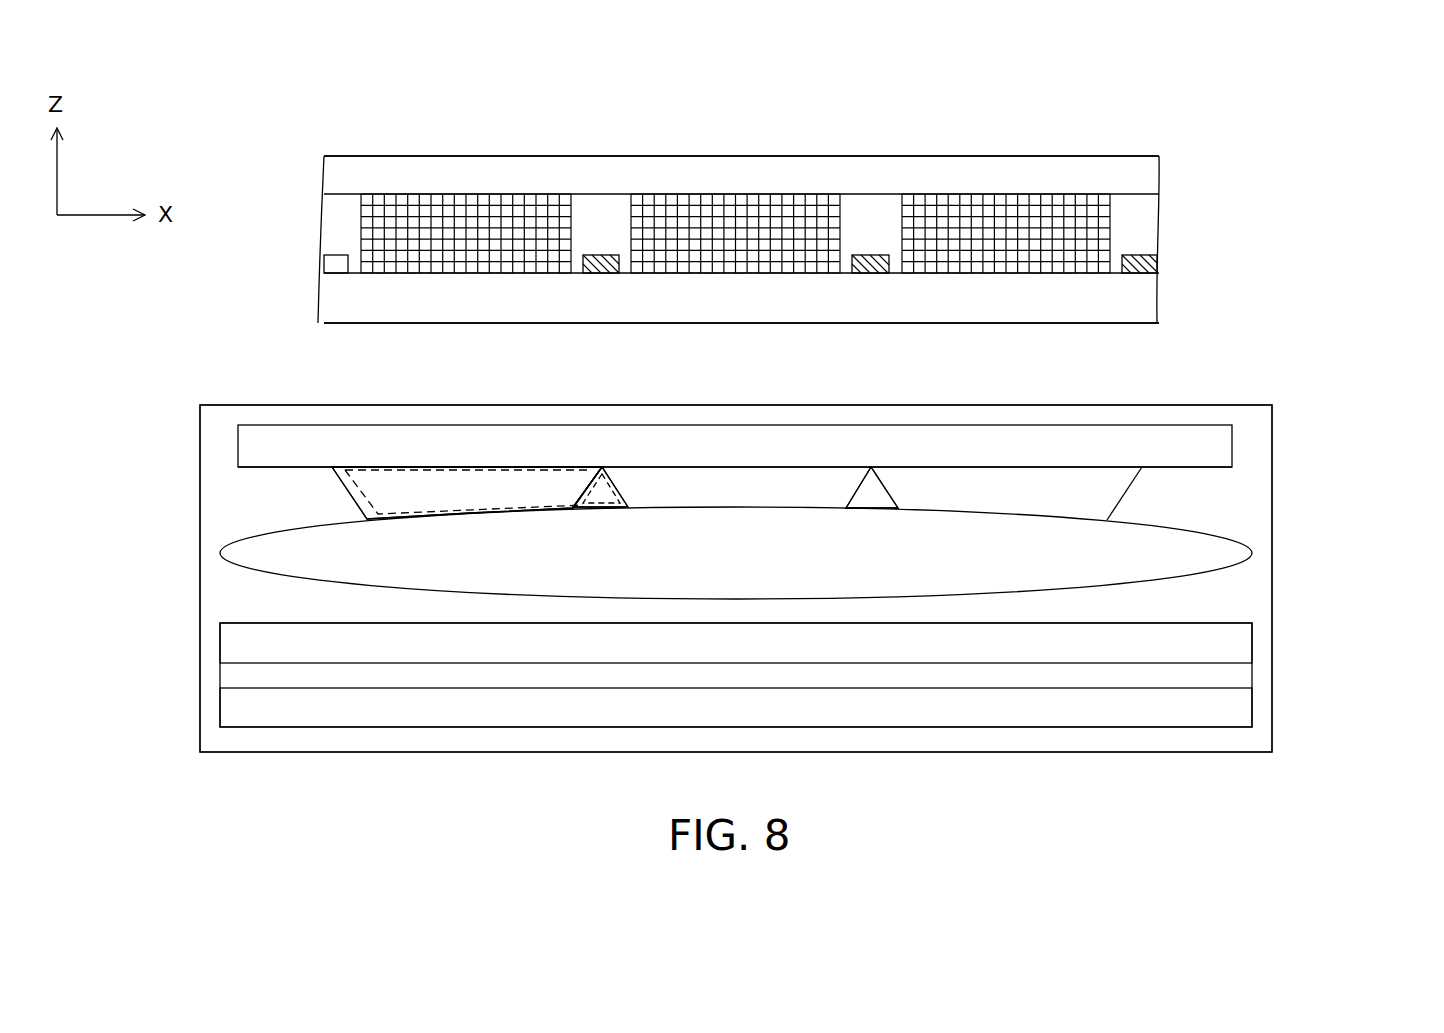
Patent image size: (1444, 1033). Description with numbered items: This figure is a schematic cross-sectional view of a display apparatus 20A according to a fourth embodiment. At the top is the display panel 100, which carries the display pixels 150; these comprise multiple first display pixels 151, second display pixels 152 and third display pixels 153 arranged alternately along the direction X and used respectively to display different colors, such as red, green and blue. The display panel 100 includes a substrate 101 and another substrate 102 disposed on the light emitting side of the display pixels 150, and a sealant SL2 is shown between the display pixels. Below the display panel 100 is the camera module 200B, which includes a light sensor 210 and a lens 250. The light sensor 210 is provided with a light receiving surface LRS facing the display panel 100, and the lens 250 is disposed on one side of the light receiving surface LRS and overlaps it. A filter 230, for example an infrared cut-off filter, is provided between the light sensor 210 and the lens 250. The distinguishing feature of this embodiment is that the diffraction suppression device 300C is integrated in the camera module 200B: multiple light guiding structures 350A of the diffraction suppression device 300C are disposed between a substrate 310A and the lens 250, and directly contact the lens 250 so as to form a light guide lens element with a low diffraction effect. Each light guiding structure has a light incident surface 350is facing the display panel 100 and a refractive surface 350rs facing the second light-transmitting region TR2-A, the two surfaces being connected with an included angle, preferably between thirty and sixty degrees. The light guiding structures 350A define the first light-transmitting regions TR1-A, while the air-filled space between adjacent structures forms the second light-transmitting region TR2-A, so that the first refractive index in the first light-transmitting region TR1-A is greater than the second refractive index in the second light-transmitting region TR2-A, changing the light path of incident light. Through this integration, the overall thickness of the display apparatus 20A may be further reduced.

The display panel 100 is at (300, 157).
The first substrate 101 is at (1145, 290).
The substrate 102 is at (1148, 173).
The second sealant SL2 is at (1148, 265).
The display pixels 150 is at (735, 178).
The first display pixels 151 is at (498, 210).
The second display pixels 152 is at (766, 210).
The third display pixels 153 is at (1014, 210).
The camera module 200B is at (132, 413).
The light sensor 210 is at (1235, 710).
The filter 230 is at (1232, 647).
The lens 250 is at (1243, 552).
The diffraction suppression device 300C is at (830, 471).
The substrate 310A is at (1210, 450).
The light guiding structures 350A is at (1103, 486).
The light incident surface 350is is at (992, 454).
The refractive surface 350rs is at (878, 497).
The first light-transmitting region TR1-A is at (510, 488).
The second light-transmitting region TR2-A is at (600, 495).
The light receiving surface LRS is at (285, 676).
The display apparatus 20A is at (1357, 818).